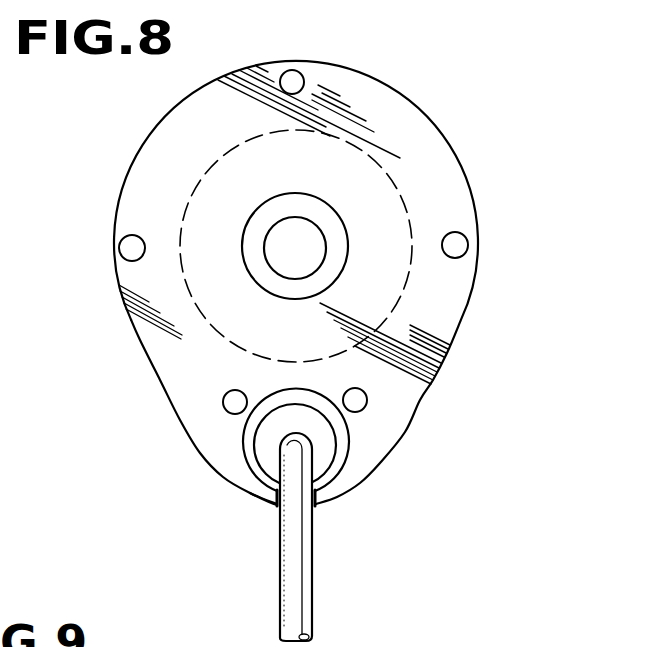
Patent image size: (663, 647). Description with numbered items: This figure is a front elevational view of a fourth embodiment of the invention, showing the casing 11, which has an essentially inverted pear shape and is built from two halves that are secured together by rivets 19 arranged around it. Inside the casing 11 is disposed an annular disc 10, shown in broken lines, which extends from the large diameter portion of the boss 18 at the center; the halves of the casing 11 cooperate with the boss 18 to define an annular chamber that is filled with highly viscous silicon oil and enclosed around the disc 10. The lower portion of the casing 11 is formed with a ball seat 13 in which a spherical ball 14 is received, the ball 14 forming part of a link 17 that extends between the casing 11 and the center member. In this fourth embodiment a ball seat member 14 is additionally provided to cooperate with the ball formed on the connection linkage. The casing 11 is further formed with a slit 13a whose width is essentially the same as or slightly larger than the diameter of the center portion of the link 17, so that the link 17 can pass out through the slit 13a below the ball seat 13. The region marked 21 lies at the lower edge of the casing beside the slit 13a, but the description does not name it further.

The annular disc 10 is at (210, 165).
The casing 11 is at (430, 130).
The ball seat 13 is at (327, 423).
The slit 13a is at (314, 505).
The spherical ball 14 is at (330, 457).
The link 17 is at (279, 554).
The boss 18 is at (340, 230).
The rivets 19 is at (296, 78).
The plate bottom edge 21 is at (262, 477).